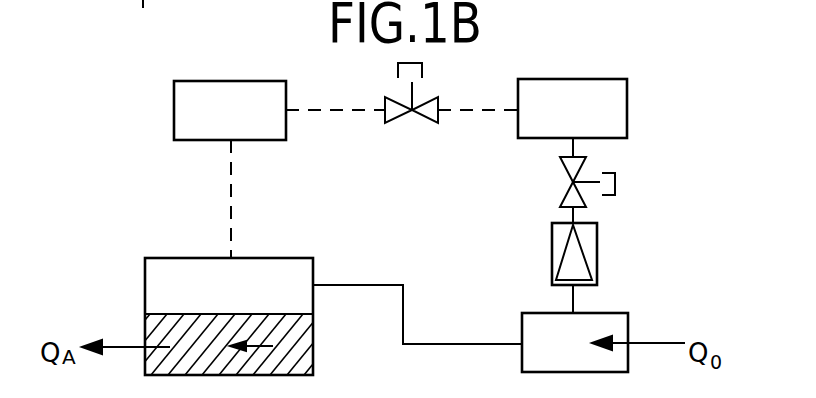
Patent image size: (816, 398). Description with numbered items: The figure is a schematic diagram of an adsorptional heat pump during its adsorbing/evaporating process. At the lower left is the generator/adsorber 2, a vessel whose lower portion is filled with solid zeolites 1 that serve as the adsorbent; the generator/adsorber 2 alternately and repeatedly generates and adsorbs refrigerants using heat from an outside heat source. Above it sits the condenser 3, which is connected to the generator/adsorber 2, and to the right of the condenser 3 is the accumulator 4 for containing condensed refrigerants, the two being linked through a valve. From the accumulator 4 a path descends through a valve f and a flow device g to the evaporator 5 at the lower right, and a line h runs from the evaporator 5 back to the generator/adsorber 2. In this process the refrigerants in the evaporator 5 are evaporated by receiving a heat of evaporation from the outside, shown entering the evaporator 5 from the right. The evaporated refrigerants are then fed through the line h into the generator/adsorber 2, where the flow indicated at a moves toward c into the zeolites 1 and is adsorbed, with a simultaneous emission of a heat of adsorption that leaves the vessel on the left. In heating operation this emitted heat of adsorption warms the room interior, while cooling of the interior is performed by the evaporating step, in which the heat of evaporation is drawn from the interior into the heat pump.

The solid zeolites 1 is at (155, 363).
The generator/adsorber 2 is at (313, 337).
The condenser 3 is at (230, 110).
The accumulator 4 is at (572, 108).
The evaporator 5 is at (575, 342).
The valve f is at (575, 182).
The pump / flow device g is at (586, 254).
The supply line h is at (417, 314).
The inflow direction a is at (260, 347).
The flow direction in liquid c is at (216, 347).